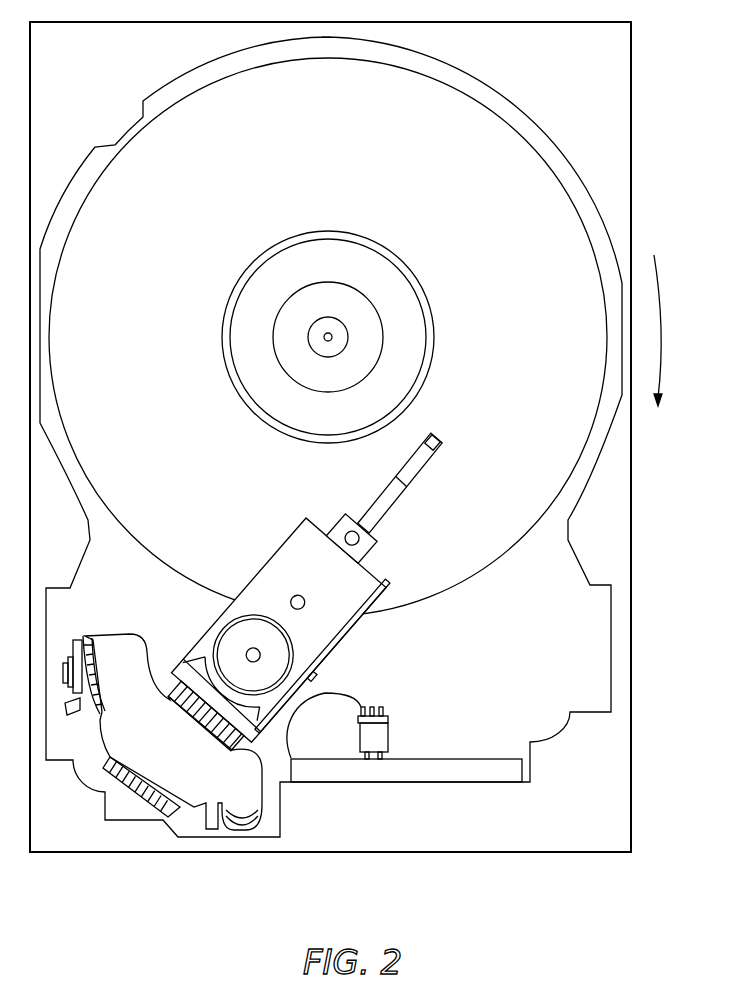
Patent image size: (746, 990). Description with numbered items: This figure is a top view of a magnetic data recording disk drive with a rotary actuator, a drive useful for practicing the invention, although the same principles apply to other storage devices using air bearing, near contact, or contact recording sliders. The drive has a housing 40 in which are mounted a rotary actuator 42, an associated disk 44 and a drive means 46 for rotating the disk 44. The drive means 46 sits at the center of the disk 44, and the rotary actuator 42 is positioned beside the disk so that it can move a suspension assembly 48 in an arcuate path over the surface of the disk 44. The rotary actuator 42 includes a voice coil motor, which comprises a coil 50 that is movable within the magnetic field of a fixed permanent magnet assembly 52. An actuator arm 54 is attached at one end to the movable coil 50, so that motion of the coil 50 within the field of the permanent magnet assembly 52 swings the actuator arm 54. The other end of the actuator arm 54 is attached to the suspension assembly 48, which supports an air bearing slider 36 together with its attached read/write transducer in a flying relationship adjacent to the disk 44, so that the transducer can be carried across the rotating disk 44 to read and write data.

The air bearing slider 36 is at (435, 437).
The housing 40 is at (632, 660).
The rotary actuator 42 is at (343, 581).
The disk 44 is at (568, 228).
The drive means 46 is at (245, 368).
The suspension assembly 48 is at (440, 464).
The coil 50 is at (157, 807).
The permanent magnet assembly 52 is at (172, 752).
The actuator arm 54 is at (323, 628).